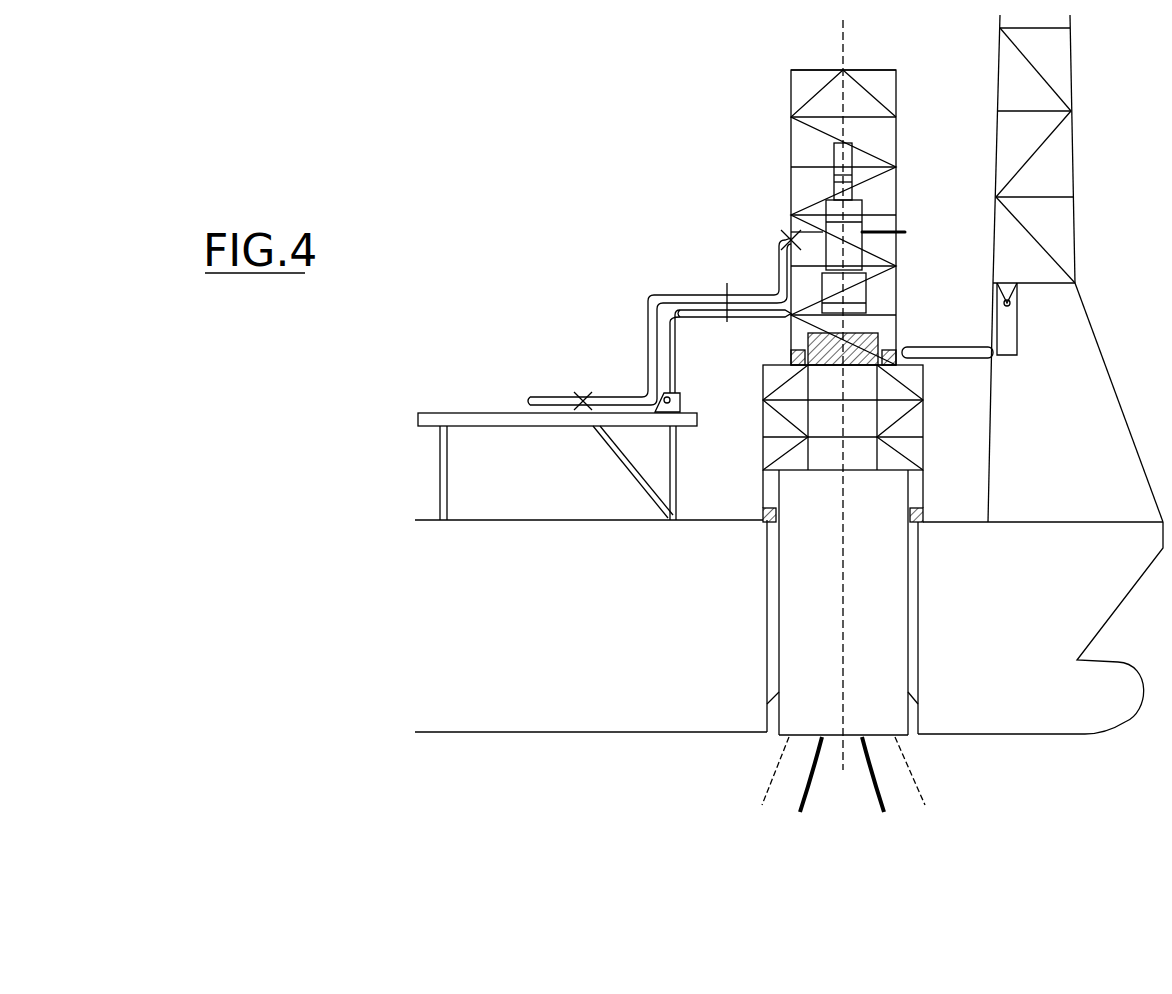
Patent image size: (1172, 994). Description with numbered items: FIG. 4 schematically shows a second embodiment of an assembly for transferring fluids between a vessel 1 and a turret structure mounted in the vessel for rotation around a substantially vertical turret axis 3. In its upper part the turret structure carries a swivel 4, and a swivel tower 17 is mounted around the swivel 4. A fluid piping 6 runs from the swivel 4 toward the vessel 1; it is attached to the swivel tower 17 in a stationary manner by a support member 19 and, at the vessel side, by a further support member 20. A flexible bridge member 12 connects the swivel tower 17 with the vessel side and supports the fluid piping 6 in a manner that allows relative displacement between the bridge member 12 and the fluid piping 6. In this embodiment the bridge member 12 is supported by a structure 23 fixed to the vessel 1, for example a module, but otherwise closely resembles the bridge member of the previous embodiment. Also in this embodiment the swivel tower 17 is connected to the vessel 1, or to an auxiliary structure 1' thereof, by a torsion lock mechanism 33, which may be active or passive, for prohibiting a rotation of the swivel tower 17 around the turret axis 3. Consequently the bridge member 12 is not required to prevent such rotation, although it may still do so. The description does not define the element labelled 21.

The vessel 1 is at (789, 641).
The auxiliary structure 1' is at (1075, 268).
The turret axis 3 is at (843, 37).
The swivel 4 is at (848, 254).
The fluid piping 6 is at (646, 308).
The flexible bridge member 12 is at (680, 338).
The swivel tower 17 is at (790, 96).
The support member 19 is at (790, 236).
The support member 20 is at (583, 391).
The conduit 21 is at (726, 290).
The structure fixed to the vessel 23 is at (523, 427).
The torsion lock mechanism 33 is at (945, 349).